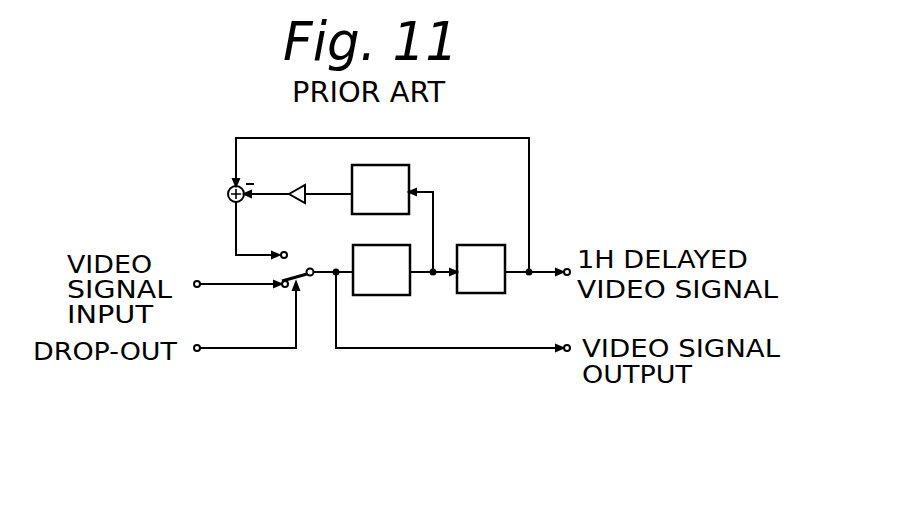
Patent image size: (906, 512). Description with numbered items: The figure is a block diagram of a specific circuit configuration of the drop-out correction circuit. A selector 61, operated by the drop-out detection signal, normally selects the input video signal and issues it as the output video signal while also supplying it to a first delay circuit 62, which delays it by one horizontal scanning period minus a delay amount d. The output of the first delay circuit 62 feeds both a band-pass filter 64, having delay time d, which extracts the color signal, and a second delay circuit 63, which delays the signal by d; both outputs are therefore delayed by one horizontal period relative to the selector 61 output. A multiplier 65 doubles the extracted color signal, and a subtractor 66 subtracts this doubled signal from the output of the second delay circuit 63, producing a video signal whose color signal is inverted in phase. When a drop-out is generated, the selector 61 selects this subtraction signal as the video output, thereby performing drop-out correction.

The selector 61 is at (300, 260).
The first delay circuit 62 is at (400, 296).
The second delay circuit 63 is at (487, 244).
The band-pass filter 64 is at (409, 168).
The multiplier 65 is at (296, 184).
The subtractor 66 is at (229, 190).